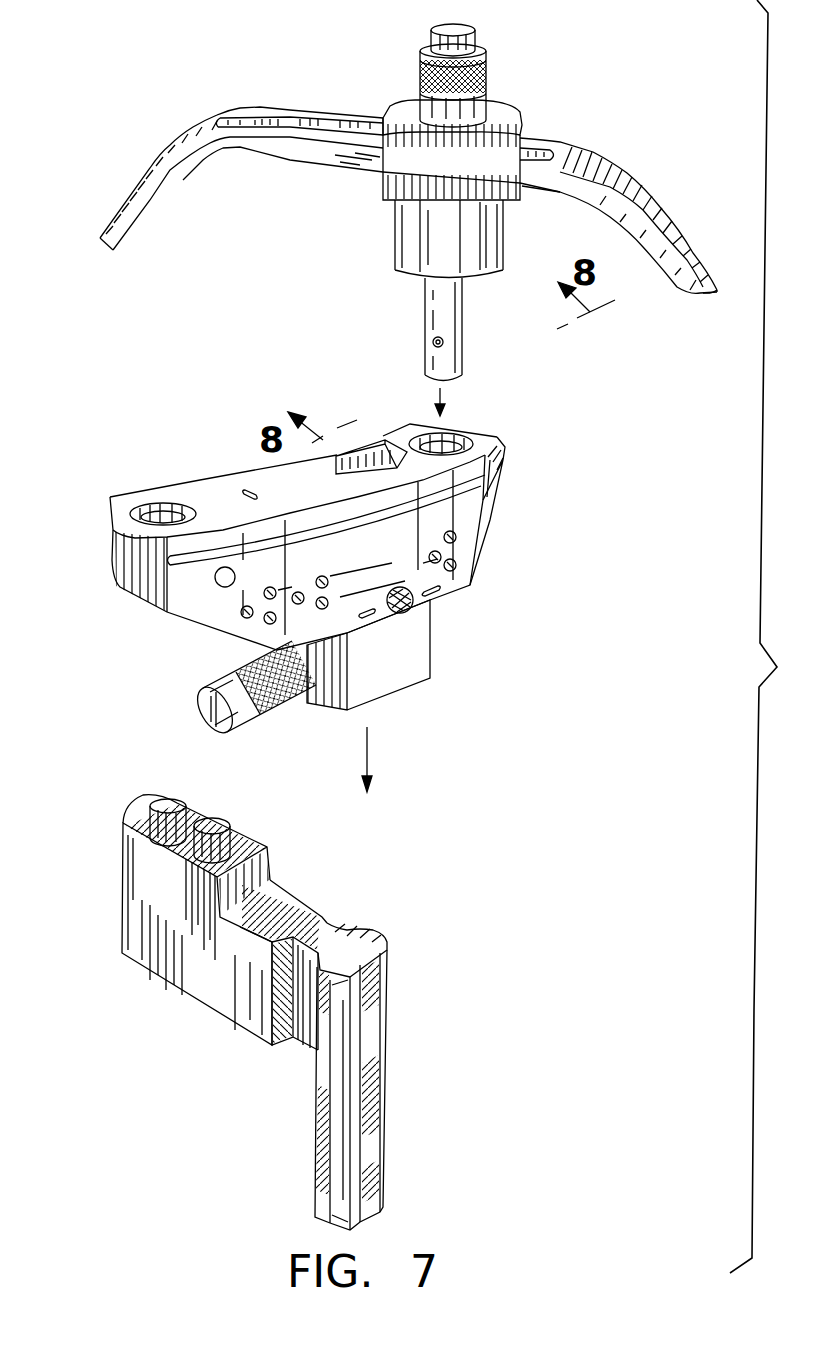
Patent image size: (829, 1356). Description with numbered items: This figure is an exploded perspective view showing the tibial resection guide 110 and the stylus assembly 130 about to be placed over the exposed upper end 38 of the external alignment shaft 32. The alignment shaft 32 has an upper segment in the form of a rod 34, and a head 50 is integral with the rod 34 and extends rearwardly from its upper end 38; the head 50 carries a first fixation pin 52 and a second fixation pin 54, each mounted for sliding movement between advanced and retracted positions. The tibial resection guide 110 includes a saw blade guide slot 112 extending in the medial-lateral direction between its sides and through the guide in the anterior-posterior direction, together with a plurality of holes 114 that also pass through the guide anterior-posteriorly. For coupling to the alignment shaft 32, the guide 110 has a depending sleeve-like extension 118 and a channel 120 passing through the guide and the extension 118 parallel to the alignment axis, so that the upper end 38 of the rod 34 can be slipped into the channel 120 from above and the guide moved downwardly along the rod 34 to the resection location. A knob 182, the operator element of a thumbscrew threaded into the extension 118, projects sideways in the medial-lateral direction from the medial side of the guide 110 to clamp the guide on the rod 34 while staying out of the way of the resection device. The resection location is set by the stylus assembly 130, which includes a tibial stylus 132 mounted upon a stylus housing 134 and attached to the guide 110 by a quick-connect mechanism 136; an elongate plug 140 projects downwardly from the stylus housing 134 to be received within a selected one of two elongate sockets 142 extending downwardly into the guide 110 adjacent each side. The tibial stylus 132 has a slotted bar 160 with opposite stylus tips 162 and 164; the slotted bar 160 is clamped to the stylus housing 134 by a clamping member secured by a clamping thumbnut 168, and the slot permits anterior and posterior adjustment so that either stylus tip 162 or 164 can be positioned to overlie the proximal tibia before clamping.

The clamping thumbnut 168 is at (417, 65).
The stylus assembly 130 is at (422, 200).
The slotted bar 160 is at (553, 146).
The tibial stylus 132 is at (632, 234).
The stylus tip 164 is at (113, 250).
The stylus tip 162 is at (702, 300).
The stylus housing 134 is at (383, 190).
The elongate plug 140 is at (443, 331).
The quick-connect mechanism 136 is at (445, 343).
The channel 120 is at (372, 452).
The elongate socket 142 is at (163, 510).
The tibial resection guide 110 is at (347, 576).
The saw blade guide slot 112 is at (485, 512).
The holes 114 is at (328, 604).
The sleeve-like extension 118 is at (367, 690).
The knob 182 is at (277, 718).
The first fixation pin 52 is at (123, 823).
The second fixation pin 54 is at (173, 848).
The head 50 is at (293, 895).
The upper end 38 is at (362, 940).
The rod 34 is at (370, 1127).
The external alignment shaft 32 is at (377, 1205).